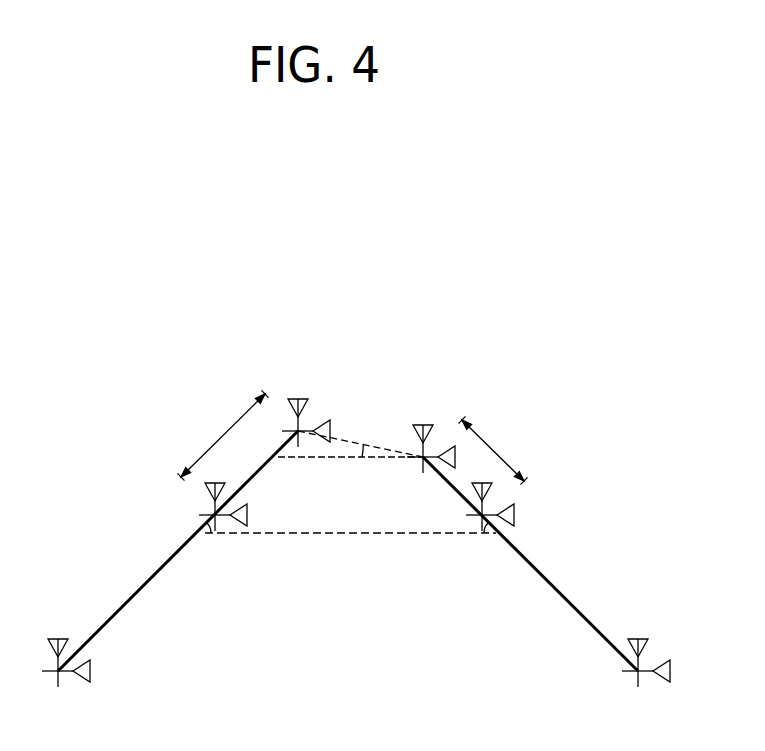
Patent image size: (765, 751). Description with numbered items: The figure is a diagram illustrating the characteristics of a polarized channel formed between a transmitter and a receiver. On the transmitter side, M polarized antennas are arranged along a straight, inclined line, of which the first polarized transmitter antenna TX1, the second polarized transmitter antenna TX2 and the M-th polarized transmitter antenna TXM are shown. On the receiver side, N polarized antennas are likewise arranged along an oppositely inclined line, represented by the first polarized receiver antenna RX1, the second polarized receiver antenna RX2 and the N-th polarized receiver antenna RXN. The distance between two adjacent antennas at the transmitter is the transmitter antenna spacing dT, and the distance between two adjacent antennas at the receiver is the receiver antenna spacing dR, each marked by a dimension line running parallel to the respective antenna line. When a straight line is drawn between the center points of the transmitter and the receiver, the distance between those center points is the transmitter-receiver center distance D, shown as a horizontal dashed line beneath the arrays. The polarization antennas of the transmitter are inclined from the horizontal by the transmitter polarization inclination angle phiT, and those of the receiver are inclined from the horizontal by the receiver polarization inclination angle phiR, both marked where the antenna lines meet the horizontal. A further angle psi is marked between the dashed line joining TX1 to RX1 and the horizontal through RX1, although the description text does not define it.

The first polarized transmitter antenna TX1 is at (306, 407).
The second polarized transmitter antenna TX2 is at (194, 507).
The M-th polarized transmitter antenna TXM is at (63, 679).
The first polarized receiver antenna RX1 is at (428, 434).
The second polarized receiver antenna RX2 is at (513, 508).
The N-th polarized receiver antenna RXN is at (645, 679).
The transmitter antenna spacing dT is at (223, 435).
The receiver antenna spacing dR is at (493, 450).
The transmitter-receiver center distance D is at (350, 519).
The angle between TX1-RX1 line and horizontal psi is at (382, 469).
The transmitter polarization inclination angle phiT is at (210, 554).
The receiver polarization inclination angle phiR is at (491, 554).